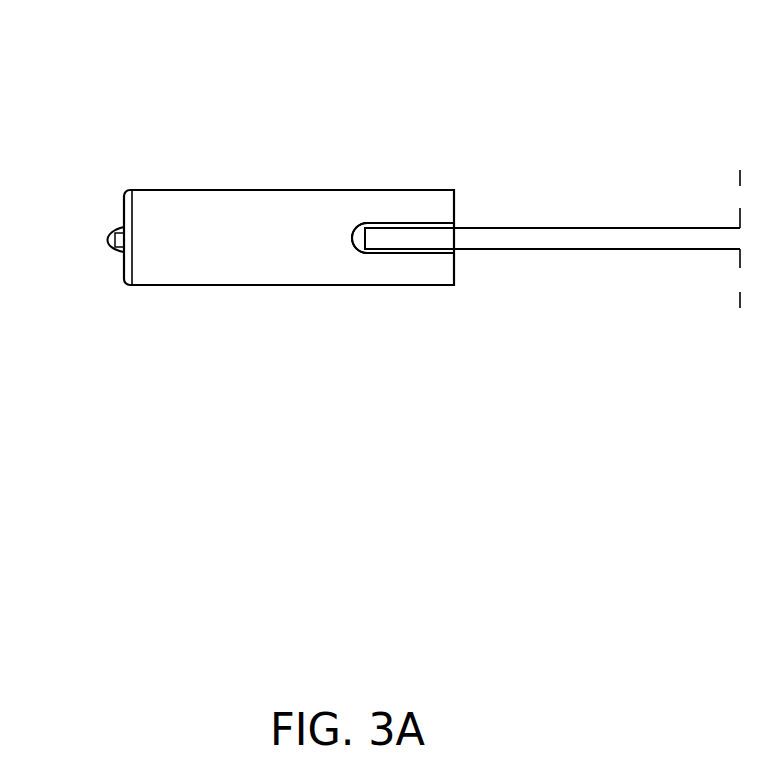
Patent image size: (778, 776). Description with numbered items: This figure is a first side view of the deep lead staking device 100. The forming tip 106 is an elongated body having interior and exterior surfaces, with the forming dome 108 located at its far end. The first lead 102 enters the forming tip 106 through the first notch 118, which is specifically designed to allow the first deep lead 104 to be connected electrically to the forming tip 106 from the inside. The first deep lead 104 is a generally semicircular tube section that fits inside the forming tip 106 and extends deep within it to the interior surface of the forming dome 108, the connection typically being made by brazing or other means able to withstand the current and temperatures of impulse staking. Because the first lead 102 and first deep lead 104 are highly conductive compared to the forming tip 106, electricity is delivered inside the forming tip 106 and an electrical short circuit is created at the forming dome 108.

The deep lead staking device 100 is at (578, 127).
The first lead 102 is at (548, 212).
The first deep lead 104 is at (358, 237).
The forming tip 106 is at (258, 190).
The forming dome 108 is at (123, 263).
The first notch 118 is at (395, 253).